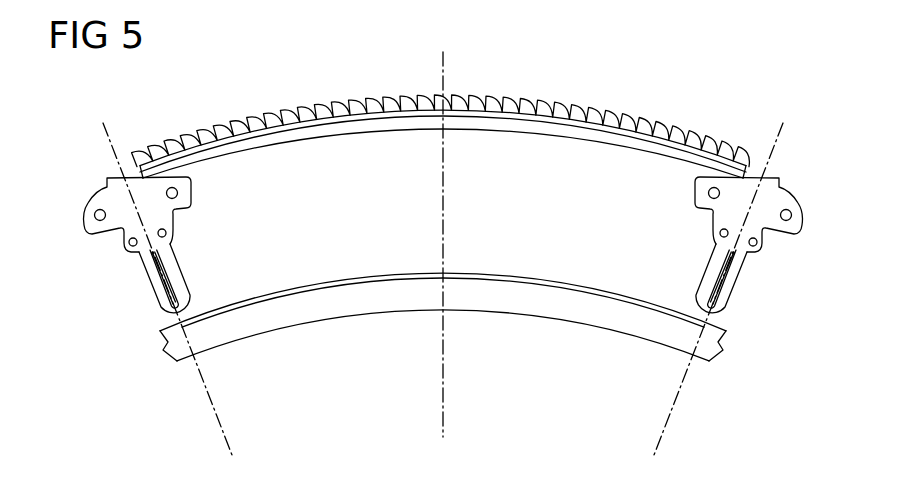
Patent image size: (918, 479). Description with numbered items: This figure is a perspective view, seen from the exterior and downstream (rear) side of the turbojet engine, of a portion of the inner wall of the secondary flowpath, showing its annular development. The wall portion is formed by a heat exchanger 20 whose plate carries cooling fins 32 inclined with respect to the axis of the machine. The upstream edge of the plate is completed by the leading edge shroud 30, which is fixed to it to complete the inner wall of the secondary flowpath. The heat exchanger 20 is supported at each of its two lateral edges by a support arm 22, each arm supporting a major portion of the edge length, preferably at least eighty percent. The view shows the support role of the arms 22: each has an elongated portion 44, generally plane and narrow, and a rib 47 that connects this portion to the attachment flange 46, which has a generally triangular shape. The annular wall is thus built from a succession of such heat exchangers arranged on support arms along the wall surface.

The heat exchanger 20 is at (441, 113).
The cooling fins 32 is at (526, 103).
The shroud 30 is at (483, 308).
The support arm 22 is at (439, 249).
The attachment flange 46 is at (108, 200).
The elongated portion 44 is at (162, 303).
The rib 47 is at (153, 273).